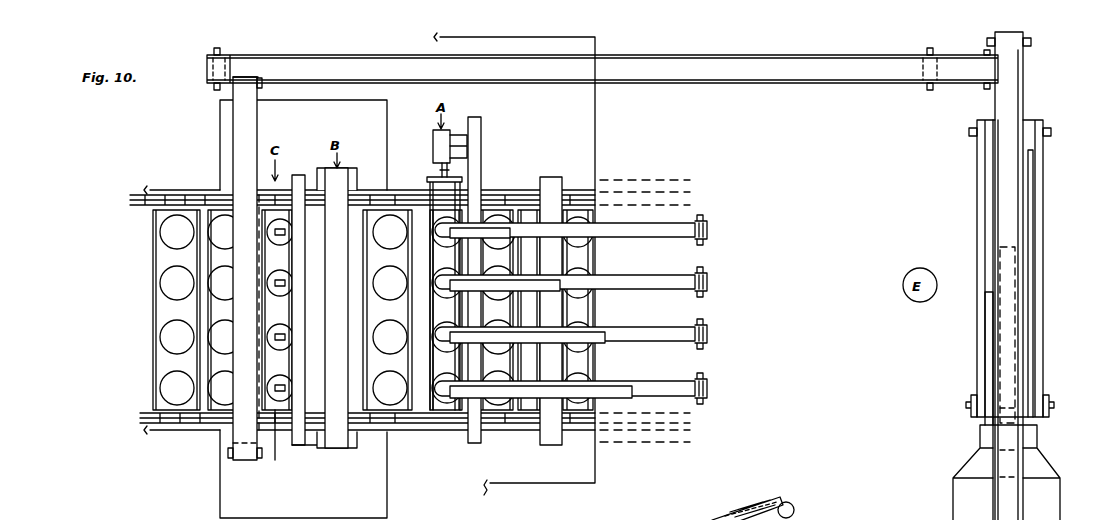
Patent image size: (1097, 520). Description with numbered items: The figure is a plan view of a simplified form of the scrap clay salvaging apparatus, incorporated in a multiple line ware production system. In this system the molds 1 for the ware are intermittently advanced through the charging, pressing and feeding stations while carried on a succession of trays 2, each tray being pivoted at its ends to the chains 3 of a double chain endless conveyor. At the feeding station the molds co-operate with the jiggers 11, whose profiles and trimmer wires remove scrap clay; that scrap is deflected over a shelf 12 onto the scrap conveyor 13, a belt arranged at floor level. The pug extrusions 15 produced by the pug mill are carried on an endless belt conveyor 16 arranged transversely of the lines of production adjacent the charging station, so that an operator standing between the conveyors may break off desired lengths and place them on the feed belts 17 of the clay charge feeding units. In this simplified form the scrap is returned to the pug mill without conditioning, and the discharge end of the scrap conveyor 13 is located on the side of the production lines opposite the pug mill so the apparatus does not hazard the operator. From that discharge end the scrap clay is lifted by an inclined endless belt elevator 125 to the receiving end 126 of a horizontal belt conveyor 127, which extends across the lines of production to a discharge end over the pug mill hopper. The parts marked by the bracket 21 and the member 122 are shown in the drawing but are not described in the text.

The molds 1 is at (176, 284).
The trays 2 is at (217, 318).
The chains 3 is at (130, 200).
The jiggers 11 is at (278, 247).
The shelf 12 is at (274, 444).
The scrap conveyor 13 is at (247, 136).
The pug extrusions 15 is at (510, 232).
The endless belt conveyor 16 is at (1043, 232).
The feed belts 17 is at (665, 231).
The bracket 21 is at (245, 86).
The tilted member 122 is at (778, 508).
The inclined endless belt elevator 125 is at (668, 62).
The receiving end 126 is at (1012, 52).
The horizontal belt conveyor 127 is at (1005, 203).